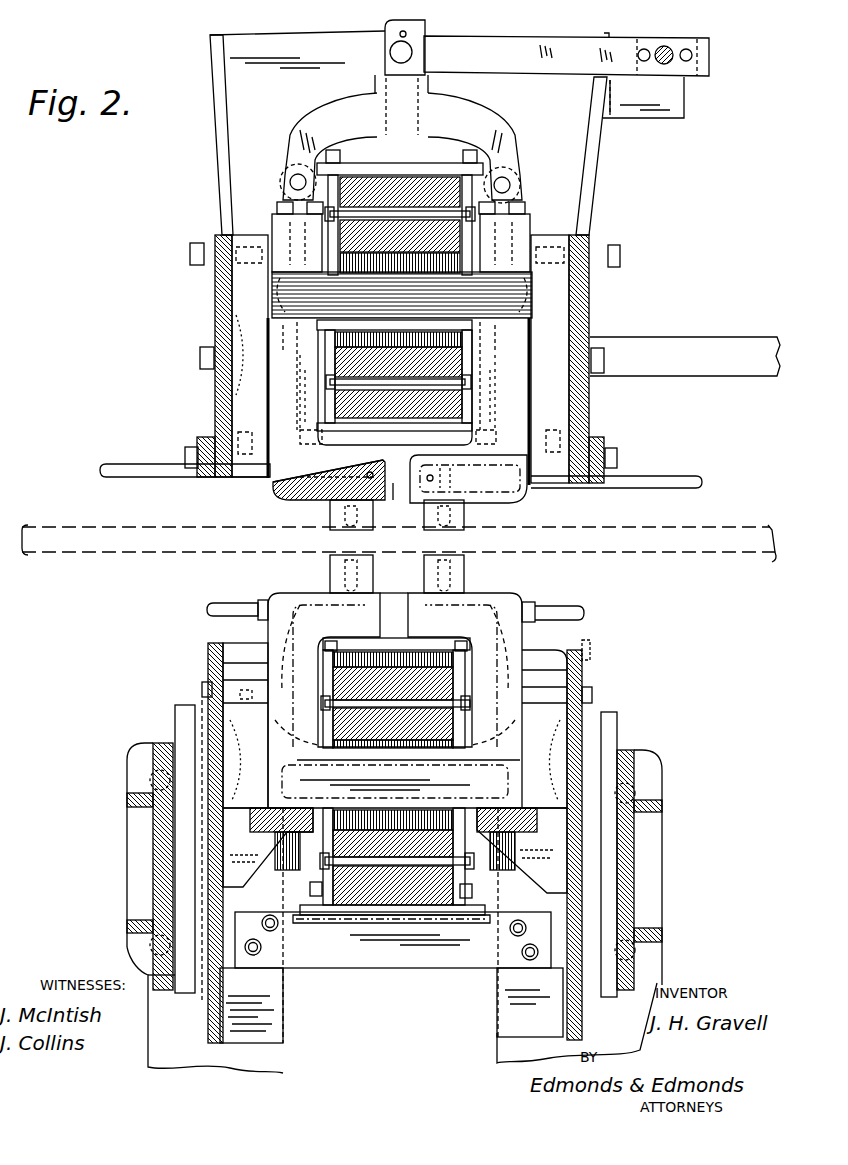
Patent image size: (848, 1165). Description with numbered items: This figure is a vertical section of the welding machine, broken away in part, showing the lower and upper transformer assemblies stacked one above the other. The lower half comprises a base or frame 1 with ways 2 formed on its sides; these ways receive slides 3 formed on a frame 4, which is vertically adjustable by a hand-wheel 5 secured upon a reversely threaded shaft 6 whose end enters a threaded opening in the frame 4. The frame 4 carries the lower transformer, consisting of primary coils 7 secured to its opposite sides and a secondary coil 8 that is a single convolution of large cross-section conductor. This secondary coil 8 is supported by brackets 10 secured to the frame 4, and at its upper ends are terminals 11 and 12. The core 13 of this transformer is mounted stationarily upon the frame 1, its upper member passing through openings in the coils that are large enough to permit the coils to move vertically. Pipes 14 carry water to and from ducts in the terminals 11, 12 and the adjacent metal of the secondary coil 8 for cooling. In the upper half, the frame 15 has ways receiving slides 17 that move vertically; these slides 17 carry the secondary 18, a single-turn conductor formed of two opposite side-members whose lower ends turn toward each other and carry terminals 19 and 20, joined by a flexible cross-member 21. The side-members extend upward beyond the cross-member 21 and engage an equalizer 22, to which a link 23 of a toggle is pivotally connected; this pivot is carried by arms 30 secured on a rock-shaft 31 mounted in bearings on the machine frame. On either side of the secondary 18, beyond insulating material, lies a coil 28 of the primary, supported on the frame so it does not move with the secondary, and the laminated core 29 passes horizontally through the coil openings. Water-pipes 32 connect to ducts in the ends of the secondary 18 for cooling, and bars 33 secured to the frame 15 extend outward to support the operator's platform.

The base or frame 1 is at (260, 1050).
The ways 2 is at (128, 805).
The slides 3 is at (606, 727).
The frame 4 is at (113, 267).
The hand-wheel 5 is at (130, 37).
The reversely threaded shaft 6 is at (73, 737).
The primary coils 7 is at (720, 908).
The secondary coil 8 is at (511, 643).
The brackets 10 is at (272, 845).
The terminal 11 is at (330, 568).
The terminal 12 is at (457, 572).
The core 13 is at (390, 893).
The pipes 14 is at (233, 607).
The frame 15 is at (576, 178).
The slides 17 is at (233, 373).
The secondary 18 is at (287, 387).
The terminal 19 is at (330, 515).
The terminal 20 is at (457, 518).
The flexible cross-member 21 is at (534, 310).
The equalizer 22 is at (337, 112).
The link 23 is at (385, 36).
The coil 28 is at (394, 505).
The core 29 is at (407, 187).
The arms 30 is at (521, 63).
The rock-shaft 31 is at (667, 63).
The water-pipes 32 is at (137, 470).
The bars 33 is at (685, 356).